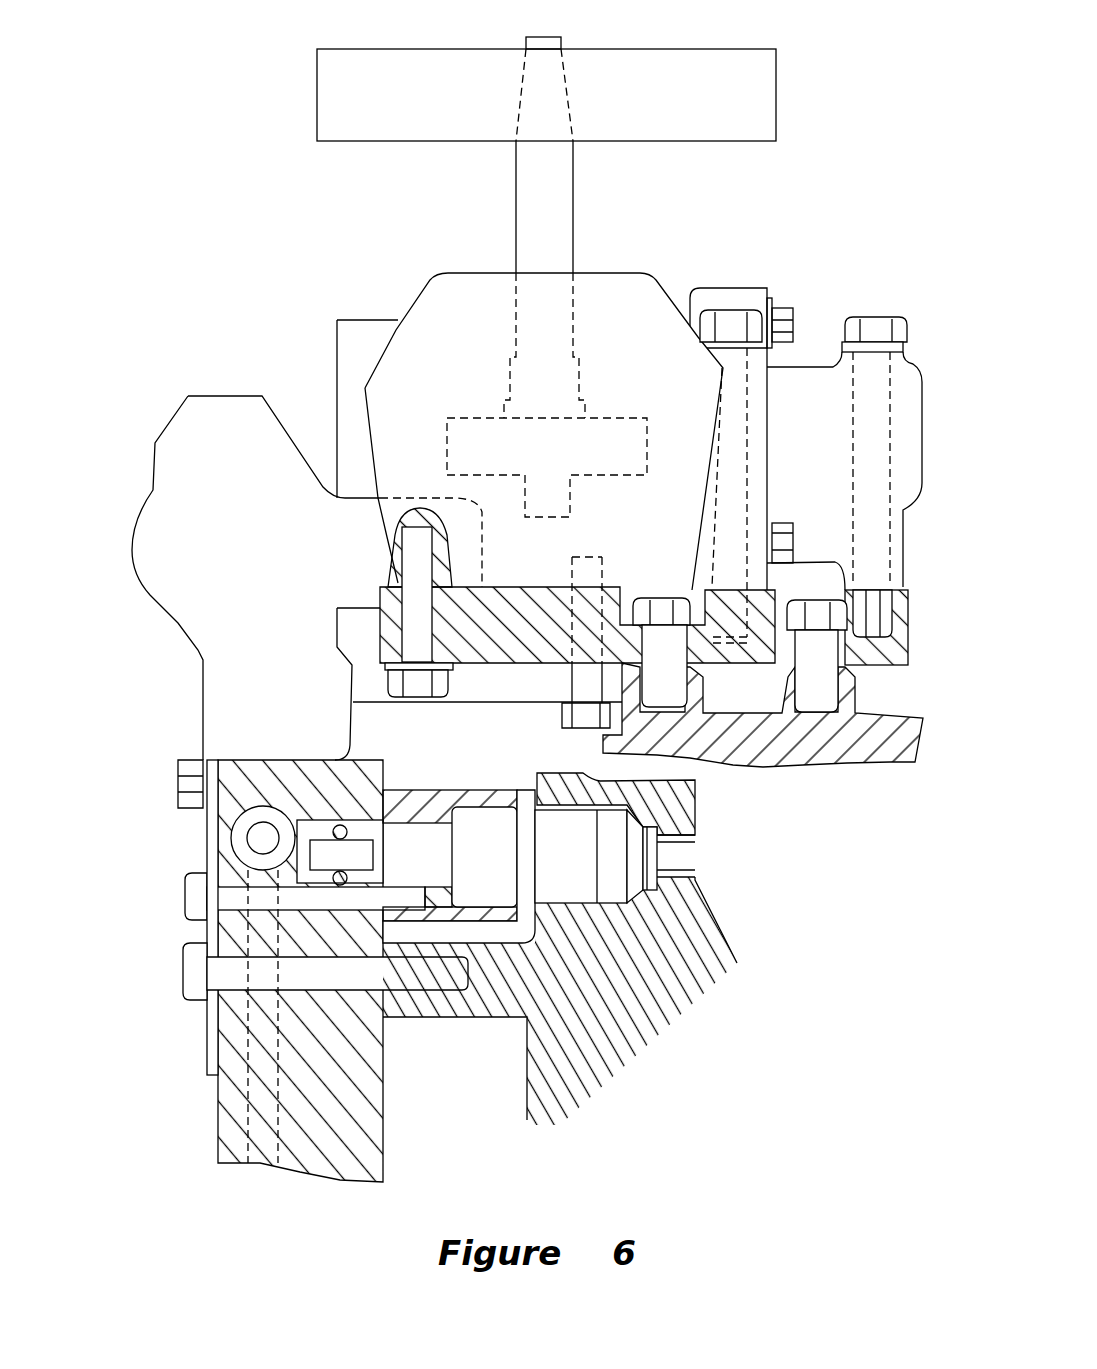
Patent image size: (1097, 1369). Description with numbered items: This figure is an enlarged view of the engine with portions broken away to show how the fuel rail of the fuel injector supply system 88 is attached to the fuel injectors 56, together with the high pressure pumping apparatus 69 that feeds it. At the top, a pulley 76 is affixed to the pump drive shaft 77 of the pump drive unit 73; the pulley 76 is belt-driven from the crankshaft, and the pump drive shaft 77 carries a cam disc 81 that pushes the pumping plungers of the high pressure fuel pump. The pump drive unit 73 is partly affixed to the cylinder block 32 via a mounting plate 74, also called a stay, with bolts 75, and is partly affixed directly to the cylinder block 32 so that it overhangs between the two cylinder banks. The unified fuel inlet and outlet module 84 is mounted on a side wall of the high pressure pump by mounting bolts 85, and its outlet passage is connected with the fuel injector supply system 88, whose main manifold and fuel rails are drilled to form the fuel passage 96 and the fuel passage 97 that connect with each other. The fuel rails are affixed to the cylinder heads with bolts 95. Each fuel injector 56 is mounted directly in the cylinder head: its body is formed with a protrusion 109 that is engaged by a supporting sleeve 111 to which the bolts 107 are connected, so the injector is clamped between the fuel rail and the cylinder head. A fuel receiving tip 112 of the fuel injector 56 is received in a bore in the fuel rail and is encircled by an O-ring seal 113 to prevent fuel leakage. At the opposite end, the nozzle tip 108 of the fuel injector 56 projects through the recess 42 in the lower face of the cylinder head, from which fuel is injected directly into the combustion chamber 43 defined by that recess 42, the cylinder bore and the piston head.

The pulley 76 is at (765, 90).
The pump drive shaft 77 is at (565, 180).
The pump drive unit 73 is at (630, 273).
The unified fuel inlet and outlet module 84 is at (372, 318).
The mounting bolts 85 is at (733, 310).
The high pressure pumping apparatus 69 is at (807, 278).
The cam disc 81 is at (602, 417).
The mounting plate 74 is at (902, 640).
The bolts 75 is at (563, 713).
The cylinder block 32 is at (822, 760).
The recess 42 is at (697, 812).
The nozzle tip 108 is at (685, 852).
The combustion chamber 43 is at (728, 947).
The fuel injector 56 is at (587, 890).
The protrusion 109 is at (530, 870).
The fuel injector supply system 88 is at (383, 1127).
The fuel passage 97 is at (265, 1138).
The bolts 95 is at (182, 980).
The bolts 107 is at (185, 890).
The fuel passage 96 is at (263, 835).
The O-ring seal 113 is at (338, 827).
The fuel receiving tip 112 is at (353, 847).
The supporting sleeve 111 is at (433, 793).